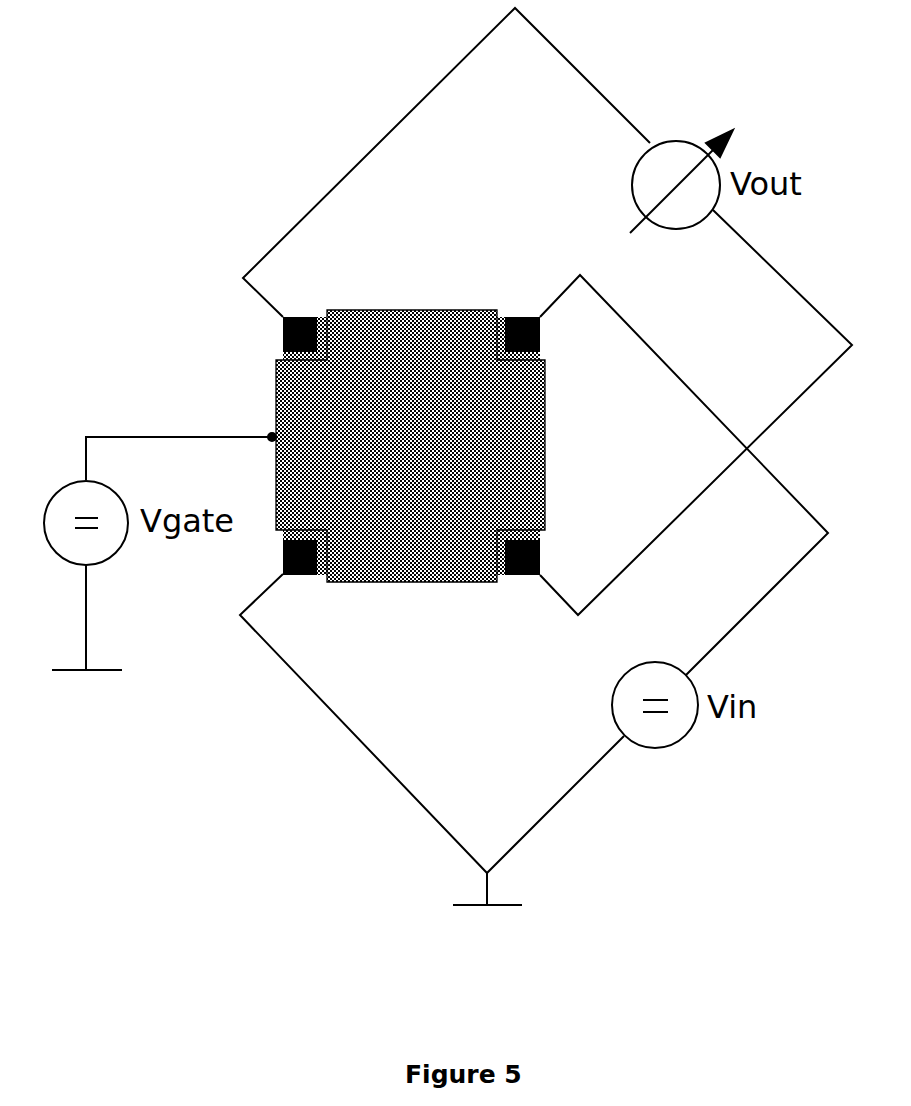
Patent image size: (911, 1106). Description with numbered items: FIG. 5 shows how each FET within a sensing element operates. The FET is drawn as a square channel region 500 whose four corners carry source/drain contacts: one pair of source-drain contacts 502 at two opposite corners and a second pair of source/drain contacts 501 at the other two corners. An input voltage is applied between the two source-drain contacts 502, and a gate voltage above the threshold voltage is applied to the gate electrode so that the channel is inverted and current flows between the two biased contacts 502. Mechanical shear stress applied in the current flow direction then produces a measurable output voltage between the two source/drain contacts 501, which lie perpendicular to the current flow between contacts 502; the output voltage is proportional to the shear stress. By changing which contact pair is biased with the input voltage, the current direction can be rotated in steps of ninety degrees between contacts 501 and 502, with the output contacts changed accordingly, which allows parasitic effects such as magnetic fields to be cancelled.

The Hall sensor device (graphene sensing layer) 500 is at (448, 440).
The source/drain contacts 501 is at (306, 316).
The source-drain contacts 502 is at (541, 333).